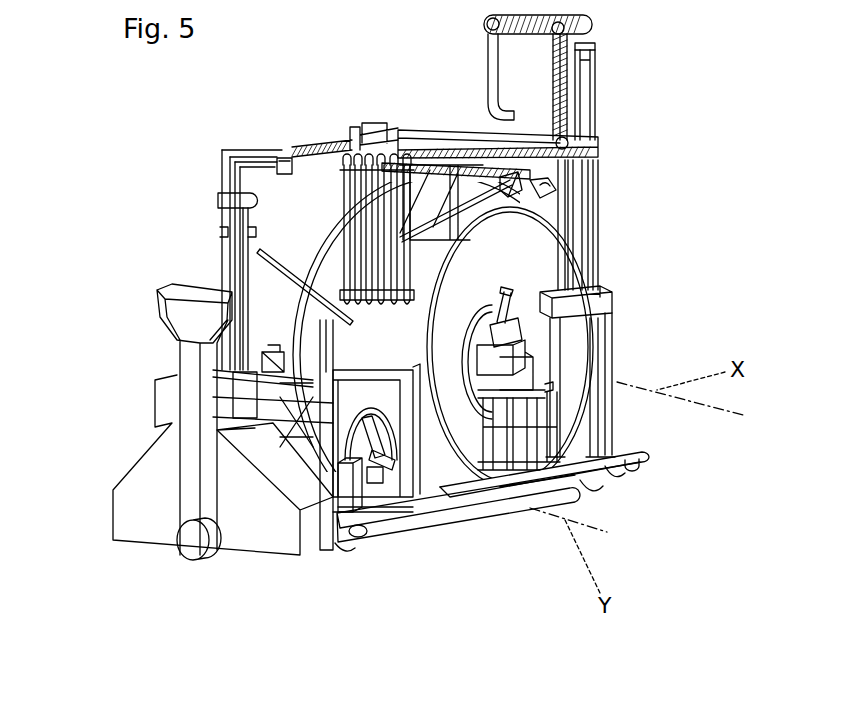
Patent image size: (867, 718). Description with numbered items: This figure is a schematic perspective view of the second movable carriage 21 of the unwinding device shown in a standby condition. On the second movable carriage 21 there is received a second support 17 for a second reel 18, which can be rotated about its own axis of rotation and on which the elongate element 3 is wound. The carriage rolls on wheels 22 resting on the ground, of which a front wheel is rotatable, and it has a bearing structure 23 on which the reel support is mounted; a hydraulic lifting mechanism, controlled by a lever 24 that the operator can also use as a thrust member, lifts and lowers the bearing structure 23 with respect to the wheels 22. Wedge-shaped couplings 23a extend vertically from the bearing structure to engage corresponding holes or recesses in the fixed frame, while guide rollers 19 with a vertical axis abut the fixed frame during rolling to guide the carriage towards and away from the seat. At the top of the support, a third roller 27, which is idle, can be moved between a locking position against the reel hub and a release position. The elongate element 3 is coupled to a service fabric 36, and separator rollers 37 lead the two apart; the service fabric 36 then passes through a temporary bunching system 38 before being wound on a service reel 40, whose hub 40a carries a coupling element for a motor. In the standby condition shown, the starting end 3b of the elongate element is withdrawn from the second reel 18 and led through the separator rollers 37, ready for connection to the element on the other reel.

The second movable carriage 21 is at (112, 230).
The elongate element 3 is at (318, 141).
The starting end 3b is at (278, 172).
The service fabric 36 is at (494, 90).
The separator rollers 37 is at (495, 128).
The temporary bunching system 38 is at (341, 181).
The third roller 27 is at (610, 297).
The second reel 18 is at (580, 332).
The second support 17 is at (512, 430).
The guide rollers 19 is at (360, 540).
The wedge-shaped couplings 23a is at (378, 528).
The bearing structure 23 is at (270, 532).
The wheels 22 is at (190, 560).
The lever 24 is at (183, 318).
The service reel 40 is at (428, 490).
The hub 40a is at (330, 510).